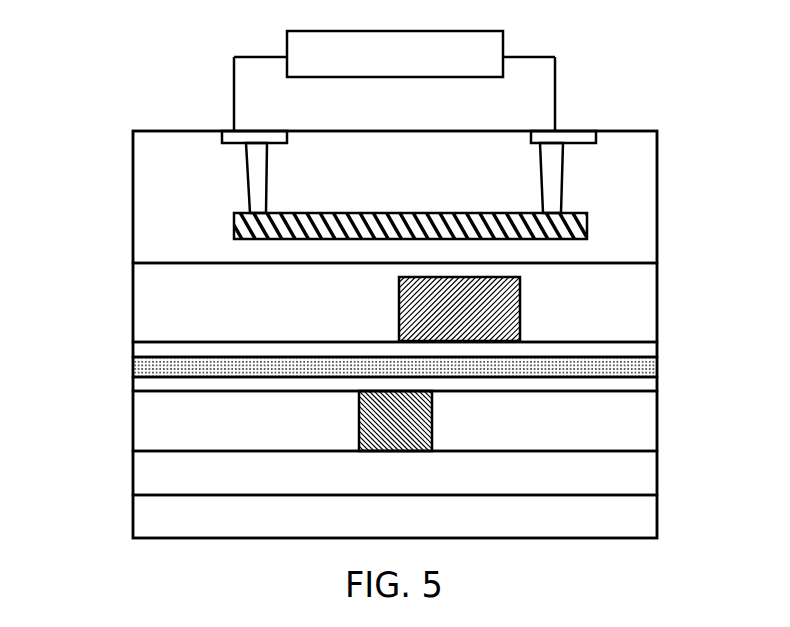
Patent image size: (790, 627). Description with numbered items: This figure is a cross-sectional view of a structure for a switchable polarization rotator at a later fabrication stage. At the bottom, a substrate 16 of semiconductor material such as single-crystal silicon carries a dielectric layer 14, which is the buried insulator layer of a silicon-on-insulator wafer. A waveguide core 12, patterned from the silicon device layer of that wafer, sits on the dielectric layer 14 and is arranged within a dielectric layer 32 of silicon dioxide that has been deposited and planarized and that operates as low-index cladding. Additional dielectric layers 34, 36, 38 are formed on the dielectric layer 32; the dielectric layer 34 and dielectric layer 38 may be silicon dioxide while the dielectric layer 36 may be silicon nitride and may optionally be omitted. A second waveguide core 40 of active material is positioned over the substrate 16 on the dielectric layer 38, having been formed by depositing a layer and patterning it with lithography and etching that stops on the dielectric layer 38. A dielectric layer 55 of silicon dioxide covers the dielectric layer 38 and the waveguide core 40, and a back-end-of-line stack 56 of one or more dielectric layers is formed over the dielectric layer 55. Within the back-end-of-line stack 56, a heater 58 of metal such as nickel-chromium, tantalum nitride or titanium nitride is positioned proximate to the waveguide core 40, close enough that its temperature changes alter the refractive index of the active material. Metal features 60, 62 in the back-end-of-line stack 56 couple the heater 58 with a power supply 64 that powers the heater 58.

The waveguide core 12 is at (382, 418).
The dielectric layer 14 is at (158, 471).
The substrate 16 is at (162, 522).
The dielectric layer 32 is at (633, 437).
The dielectric layer 34 is at (632, 385).
The dielectric layer 36 is at (187, 366).
The dielectric layer 38 is at (632, 352).
The waveguide core 40 is at (497, 308).
The dielectric layer 55 is at (183, 305).
The back-end-of-line stack 56 is at (183, 210).
The heater 58 is at (533, 223).
The metal feature 60 is at (247, 136).
The metal feature 62 is at (570, 137).
The power supply 64 is at (460, 50).